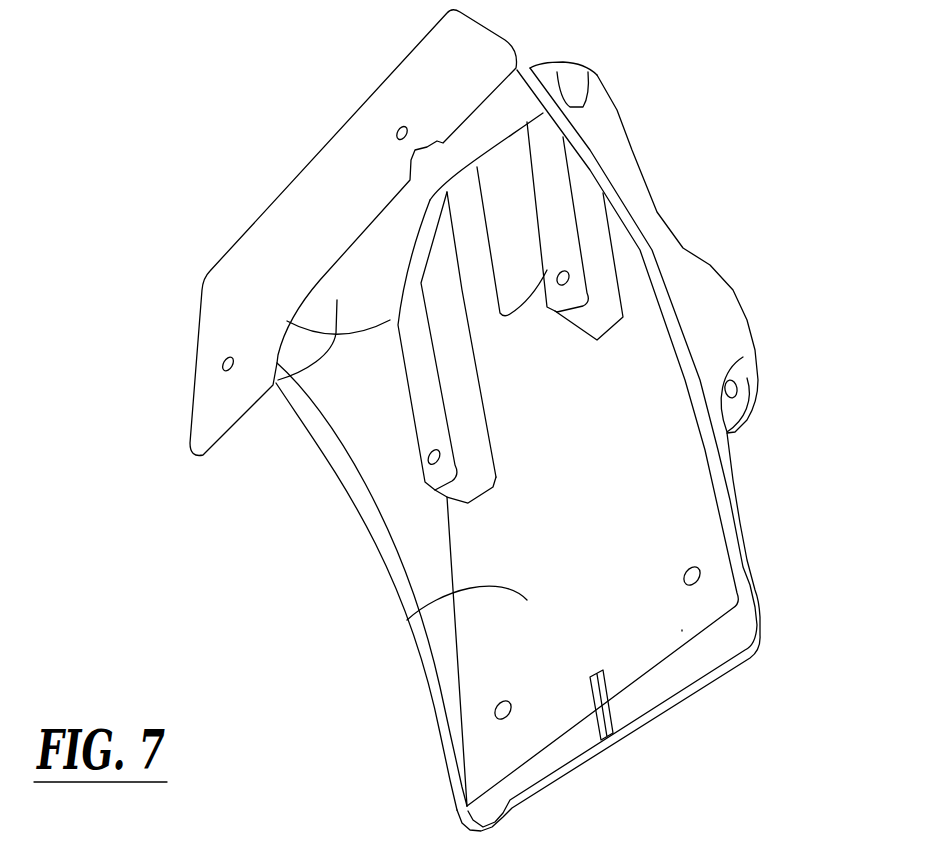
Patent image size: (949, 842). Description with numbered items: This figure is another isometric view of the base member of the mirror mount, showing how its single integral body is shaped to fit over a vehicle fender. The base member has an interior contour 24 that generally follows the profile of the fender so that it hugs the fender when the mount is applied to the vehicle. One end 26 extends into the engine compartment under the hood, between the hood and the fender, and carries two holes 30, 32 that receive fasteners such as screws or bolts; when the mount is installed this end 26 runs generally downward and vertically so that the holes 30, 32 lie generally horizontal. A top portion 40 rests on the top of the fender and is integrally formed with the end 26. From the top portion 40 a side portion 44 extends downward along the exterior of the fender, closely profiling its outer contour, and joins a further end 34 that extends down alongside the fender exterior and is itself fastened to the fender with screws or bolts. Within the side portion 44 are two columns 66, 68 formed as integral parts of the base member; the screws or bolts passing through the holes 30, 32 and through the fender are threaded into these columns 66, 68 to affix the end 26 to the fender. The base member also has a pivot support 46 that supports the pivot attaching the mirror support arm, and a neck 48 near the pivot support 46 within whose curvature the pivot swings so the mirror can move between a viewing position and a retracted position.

The interior contour 24 is at (437, 708).
The end 26 is at (238, 313).
The hole 30 is at (397, 132).
The hole 32 is at (223, 367).
The further end 34 is at (682, 630).
The top portion 40 is at (277, 380).
The side portion 44 is at (407, 620).
The pivot support 46 is at (733, 330).
The neck 48 is at (568, 92).
The column 66 is at (590, 278).
The column 68 is at (437, 484).